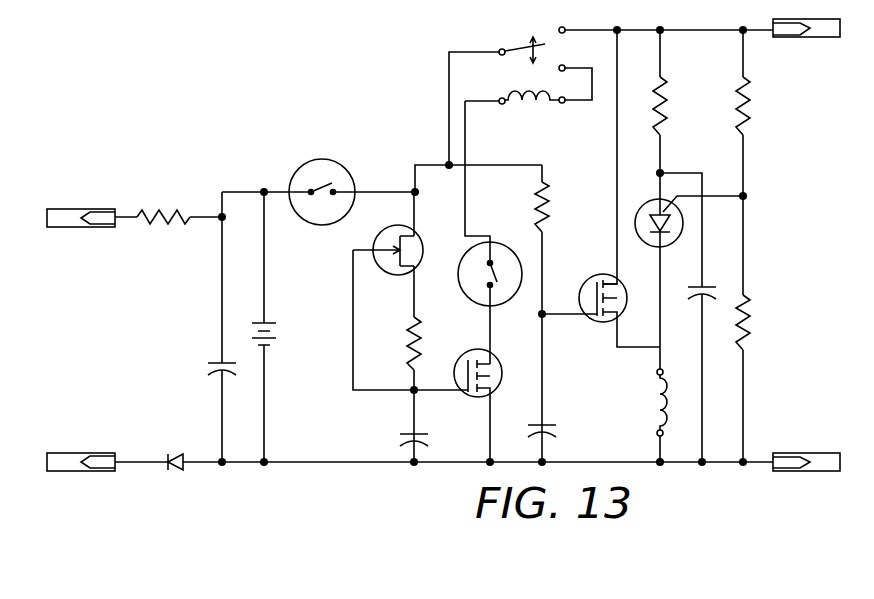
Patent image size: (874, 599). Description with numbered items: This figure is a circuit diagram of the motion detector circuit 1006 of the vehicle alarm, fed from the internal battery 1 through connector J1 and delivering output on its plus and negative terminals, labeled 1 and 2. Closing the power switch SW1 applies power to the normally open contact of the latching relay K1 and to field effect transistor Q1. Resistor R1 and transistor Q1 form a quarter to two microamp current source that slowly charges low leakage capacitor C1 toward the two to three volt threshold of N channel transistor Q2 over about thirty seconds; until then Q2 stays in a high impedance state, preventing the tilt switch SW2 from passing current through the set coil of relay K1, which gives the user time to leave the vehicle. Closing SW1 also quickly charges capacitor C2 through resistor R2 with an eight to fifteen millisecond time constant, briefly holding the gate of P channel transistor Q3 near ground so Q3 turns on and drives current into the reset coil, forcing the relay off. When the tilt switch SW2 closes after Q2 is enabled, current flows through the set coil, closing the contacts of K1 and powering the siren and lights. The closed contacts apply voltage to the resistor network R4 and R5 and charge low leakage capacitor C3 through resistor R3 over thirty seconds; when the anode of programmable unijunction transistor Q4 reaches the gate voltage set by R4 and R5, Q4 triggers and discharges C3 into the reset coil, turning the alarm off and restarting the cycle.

The circuit 1006 is at (443, 267).
The connector J1 is at (89, 327).
The battery 1 is at (798, 37).
The NEG terminal 2 is at (798, 447).
The power switch SW1 is at (339, 194).
The tilt switch SW2 is at (490, 257).
The field effect transistor Q1 is at (388, 238).
The N channel MOS enhancement transistor Q2 is at (478, 393).
The P channel MOS transistor Q3 is at (601, 296).
The programmable unijunction transistor Q4 is at (655, 211).
The resistor R1 is at (399, 343).
The resistor R2 is at (559, 207).
The resistor R3 is at (762, 106).
The resistor R4 is at (679, 106).
The resistor R5 is at (762, 322).
The capacitor C1 is at (400, 442).
The capacitor C2 is at (533, 419).
The capacitor C3 is at (712, 280).
The latching relay K1 is at (507, 91).